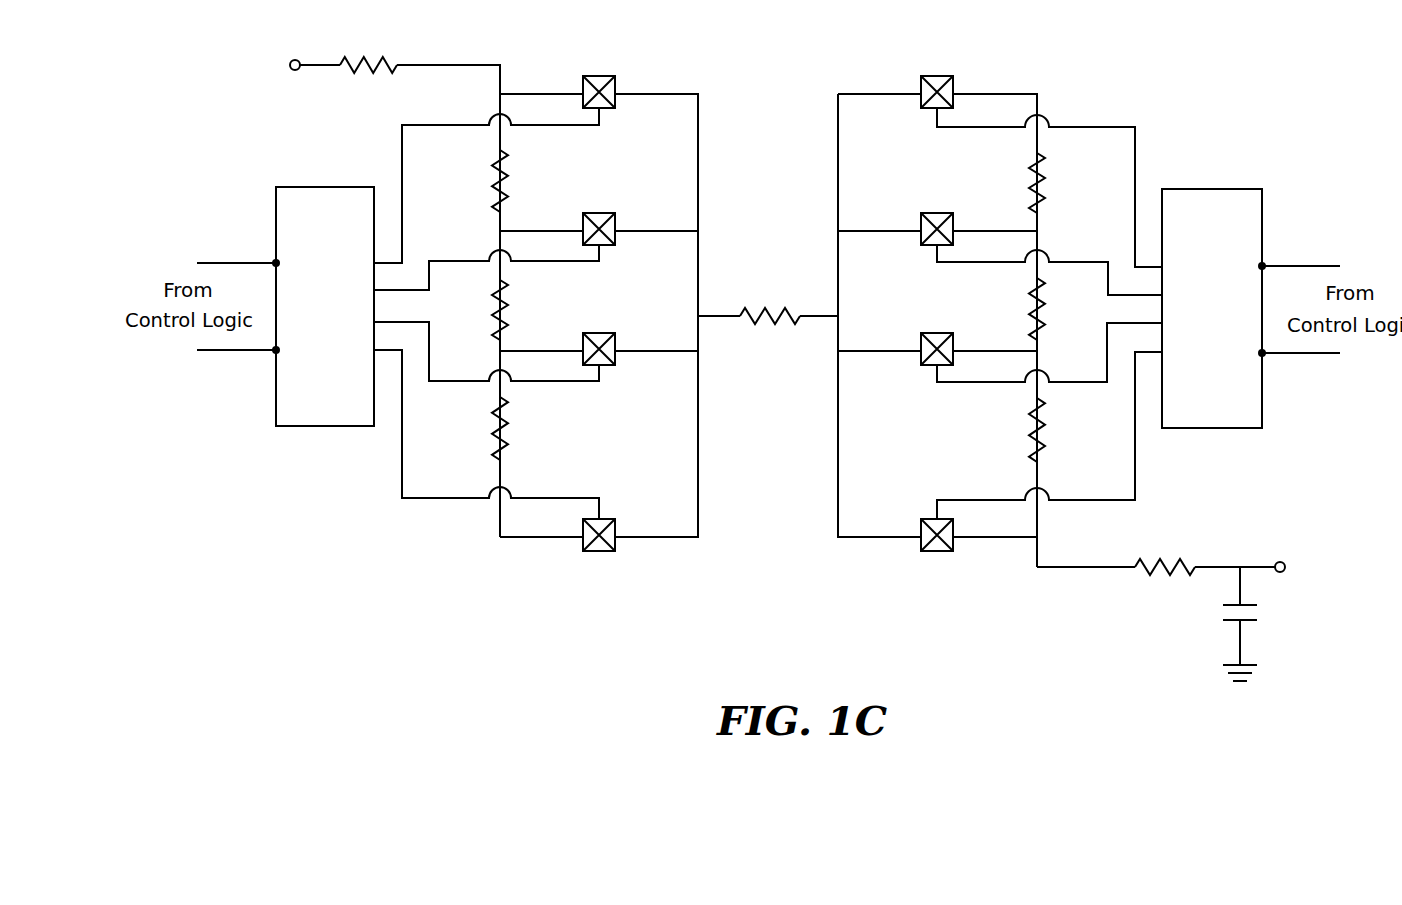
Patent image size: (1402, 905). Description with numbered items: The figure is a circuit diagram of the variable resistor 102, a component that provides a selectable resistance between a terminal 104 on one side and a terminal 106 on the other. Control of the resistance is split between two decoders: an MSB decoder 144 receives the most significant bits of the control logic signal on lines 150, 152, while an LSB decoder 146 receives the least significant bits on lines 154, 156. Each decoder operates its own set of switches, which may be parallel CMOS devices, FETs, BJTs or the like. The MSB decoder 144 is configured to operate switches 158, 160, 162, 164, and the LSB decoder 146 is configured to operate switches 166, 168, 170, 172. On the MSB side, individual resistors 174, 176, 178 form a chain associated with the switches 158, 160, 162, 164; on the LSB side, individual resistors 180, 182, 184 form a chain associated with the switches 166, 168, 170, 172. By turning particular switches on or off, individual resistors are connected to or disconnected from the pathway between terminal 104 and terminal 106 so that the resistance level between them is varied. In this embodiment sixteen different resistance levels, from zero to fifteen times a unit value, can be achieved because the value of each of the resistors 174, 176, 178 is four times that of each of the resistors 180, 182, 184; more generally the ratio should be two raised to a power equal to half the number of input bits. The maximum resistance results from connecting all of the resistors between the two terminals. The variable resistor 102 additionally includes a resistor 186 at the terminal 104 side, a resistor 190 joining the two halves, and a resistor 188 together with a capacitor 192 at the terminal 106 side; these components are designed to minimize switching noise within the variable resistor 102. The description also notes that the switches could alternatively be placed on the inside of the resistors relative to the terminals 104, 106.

The variable resistor 102 is at (1305, 115).
The terminal 104 is at (292, 65).
The terminal 106 is at (1288, 570).
The MSB decoder 144 is at (307, 388).
The LSB decoder 146 is at (1192, 393).
The line 150 is at (238, 262).
The line 152 is at (238, 352).
The line 154 is at (1298, 264).
The line 156 is at (1298, 355).
The switch 158 is at (606, 76).
The switch 160 is at (606, 213).
The switch 162 is at (606, 333).
The switch 164 is at (606, 519).
The switch 166 is at (930, 76).
The switch 168 is at (930, 213).
The switch 170 is at (930, 333).
The switch 172 is at (930, 519).
The resistor 174 is at (512, 172).
The resistor 176 is at (512, 298).
The resistor 178 is at (512, 438).
The resistor 180 is at (1025, 172).
The resistor 182 is at (1025, 298).
The resistor 184 is at (1025, 438).
The resistor 186 is at (378, 58).
The resistor 188 is at (1160, 577).
The resistor 190 is at (755, 308).
The capacitor 192 is at (1228, 625).